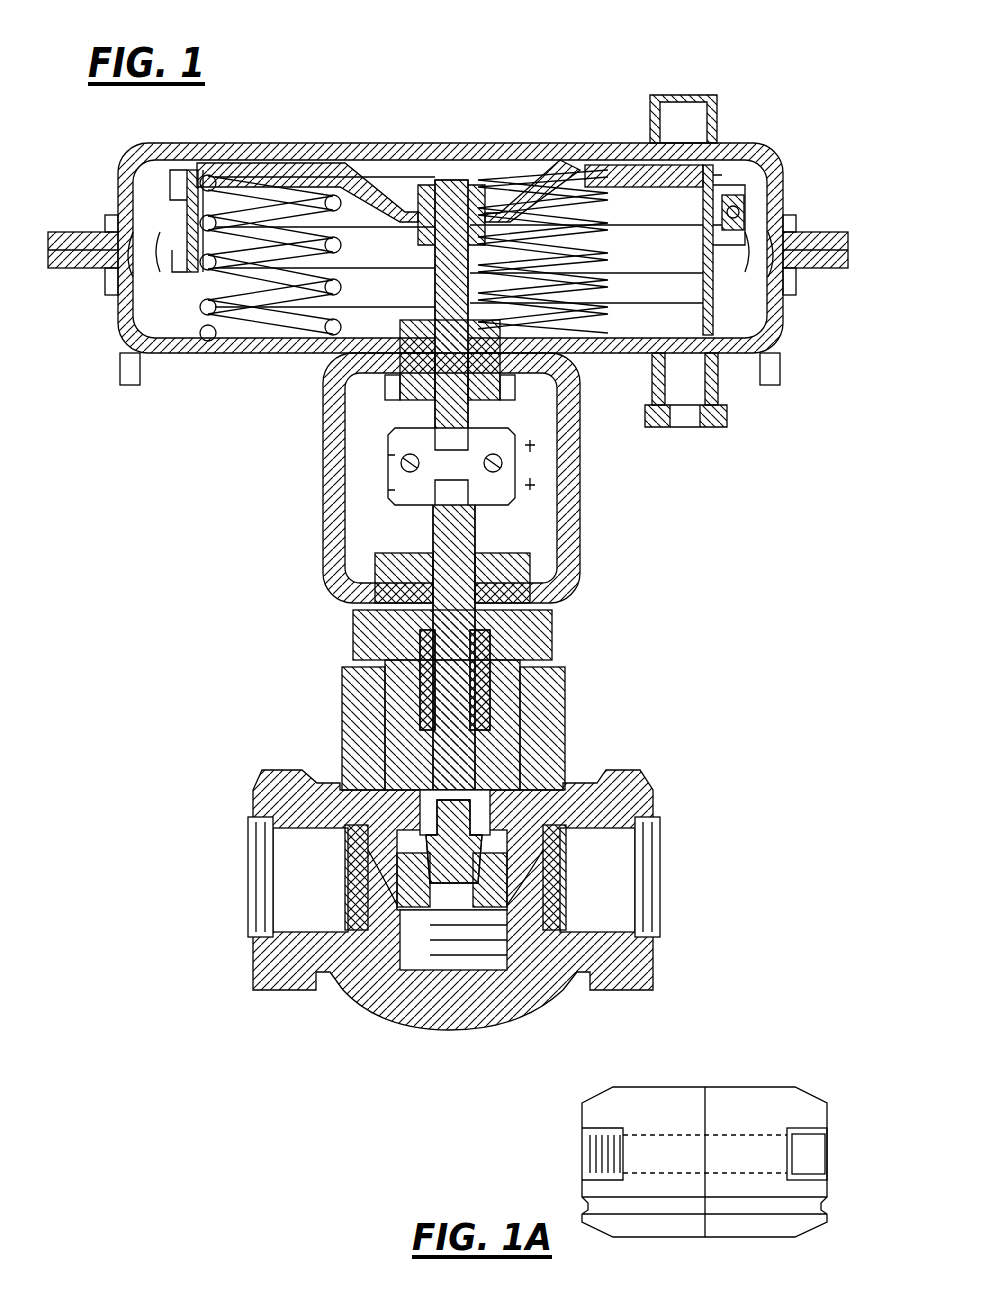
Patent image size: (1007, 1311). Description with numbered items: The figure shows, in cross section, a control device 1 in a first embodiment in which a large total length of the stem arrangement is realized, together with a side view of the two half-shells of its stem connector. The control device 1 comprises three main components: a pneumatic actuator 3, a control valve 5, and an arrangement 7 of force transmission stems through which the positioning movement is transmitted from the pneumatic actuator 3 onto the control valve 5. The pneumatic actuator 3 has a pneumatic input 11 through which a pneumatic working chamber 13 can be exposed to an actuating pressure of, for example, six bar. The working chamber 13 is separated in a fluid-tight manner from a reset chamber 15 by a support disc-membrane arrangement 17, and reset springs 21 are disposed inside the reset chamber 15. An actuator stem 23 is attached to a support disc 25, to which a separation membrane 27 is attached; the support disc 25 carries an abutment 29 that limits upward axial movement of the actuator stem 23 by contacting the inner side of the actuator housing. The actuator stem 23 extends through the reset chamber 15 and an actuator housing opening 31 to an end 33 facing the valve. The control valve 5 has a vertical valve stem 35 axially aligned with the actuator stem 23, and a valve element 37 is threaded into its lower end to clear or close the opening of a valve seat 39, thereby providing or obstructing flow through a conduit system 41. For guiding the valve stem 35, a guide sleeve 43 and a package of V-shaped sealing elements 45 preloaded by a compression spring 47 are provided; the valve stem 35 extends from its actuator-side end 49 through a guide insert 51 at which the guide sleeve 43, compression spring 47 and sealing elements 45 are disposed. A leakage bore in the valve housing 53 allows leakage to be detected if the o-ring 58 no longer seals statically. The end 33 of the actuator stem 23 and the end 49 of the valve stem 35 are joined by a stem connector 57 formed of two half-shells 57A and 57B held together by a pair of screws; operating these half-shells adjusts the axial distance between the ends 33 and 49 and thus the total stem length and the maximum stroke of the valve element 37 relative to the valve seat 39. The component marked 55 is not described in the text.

In FIG. 1, the control device 1 is at (742, 120).
In FIG. 1, the pneumatic actuator 3 is at (392, 140).
In FIG. 1, the control valve 5 is at (625, 765).
In FIG. 1, the arrangement of force transmission stems 7 is at (423, 530).
In FIG. 1, the pneumatic input 11 is at (720, 92).
In FIG. 1, the pneumatic working chamber 13 is at (510, 180).
In FIG. 1, the reset chamber 15 is at (648, 330).
In FIG. 1, the support disc-membrane arrangement 17 is at (250, 170).
In FIG. 1, the reset springs 21 is at (262, 308).
In FIG. 1, the actuator stem 23 is at (437, 405).
In FIG. 1, the support disc 25 is at (568, 185).
In FIG. 1, the separation membrane 27 is at (790, 300).
In FIG. 1, the abutment 29 is at (330, 185).
In FIG. 1, the actuator housing opening 31 is at (592, 360).
In FIG. 1, the valve-side end of the actuator stem 33 is at (386, 473).
In FIG. 1, the valve stem 35 is at (555, 624).
In FIG. 1, the valve element 37 is at (432, 890).
In FIG. 1, the valve seat 39 is at (485, 880).
In FIG. 1, the conduit system 41 is at (630, 968).
In FIG. 1, the guide sleeve 43 is at (555, 697).
In FIG. 1, the sealing elements 45 is at (362, 650).
In FIG. 1, the compression spring 47 is at (482, 690).
In FIG. 1, the actuator-side end of the valve stem 49 is at (555, 560).
In FIG. 1, the guide insert 51 is at (355, 622).
In FIG. 1, the valve housing 53 is at (650, 785).
In FIG. 1, the gland 55 is at (560, 742).
In FIG. 1, the stem connector 57 is at (386, 478).
In FIG. 1A, the stem connector 57 is at (660, 1140).
In FIG. 1A, the half-shell 57A is at (660, 1100).
In FIG. 1A, the half-shell 57B is at (775, 1100).
In FIG. 1, the o-ring 58 is at (523, 765).